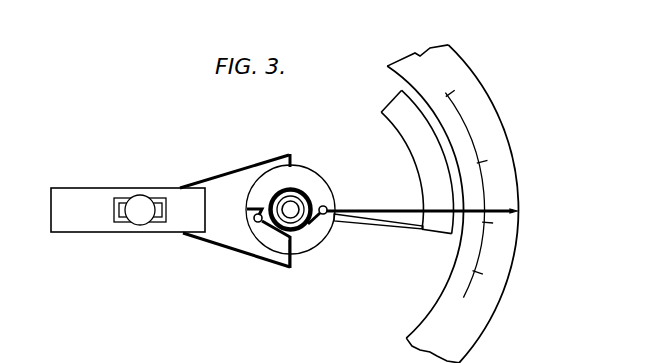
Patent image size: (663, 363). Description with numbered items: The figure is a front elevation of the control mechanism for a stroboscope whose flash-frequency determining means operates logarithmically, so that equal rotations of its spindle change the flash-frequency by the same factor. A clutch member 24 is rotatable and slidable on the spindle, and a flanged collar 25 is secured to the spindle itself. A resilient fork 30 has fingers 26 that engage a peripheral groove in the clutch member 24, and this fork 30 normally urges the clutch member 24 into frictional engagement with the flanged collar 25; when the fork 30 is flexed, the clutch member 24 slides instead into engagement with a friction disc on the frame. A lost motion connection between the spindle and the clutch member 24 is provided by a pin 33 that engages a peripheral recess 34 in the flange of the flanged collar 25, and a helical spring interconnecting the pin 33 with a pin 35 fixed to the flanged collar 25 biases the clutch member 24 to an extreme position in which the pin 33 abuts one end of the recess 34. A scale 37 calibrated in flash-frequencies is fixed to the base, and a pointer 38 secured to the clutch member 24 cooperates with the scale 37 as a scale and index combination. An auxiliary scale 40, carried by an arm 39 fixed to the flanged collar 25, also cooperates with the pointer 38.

The clutch member 24 is at (263, 229).
The flanged collar 25 is at (305, 182).
The fingers 26 is at (292, 158).
The resilient fork 30 is at (227, 175).
The pin 33 is at (254, 221).
The peripheral recess 34 is at (282, 243).
The pin 35 is at (306, 227).
The scale 37 is at (476, 329).
The pointer 38 is at (405, 211).
The arm 39 is at (380, 225).
The auxiliary scale 40 is at (401, 101).